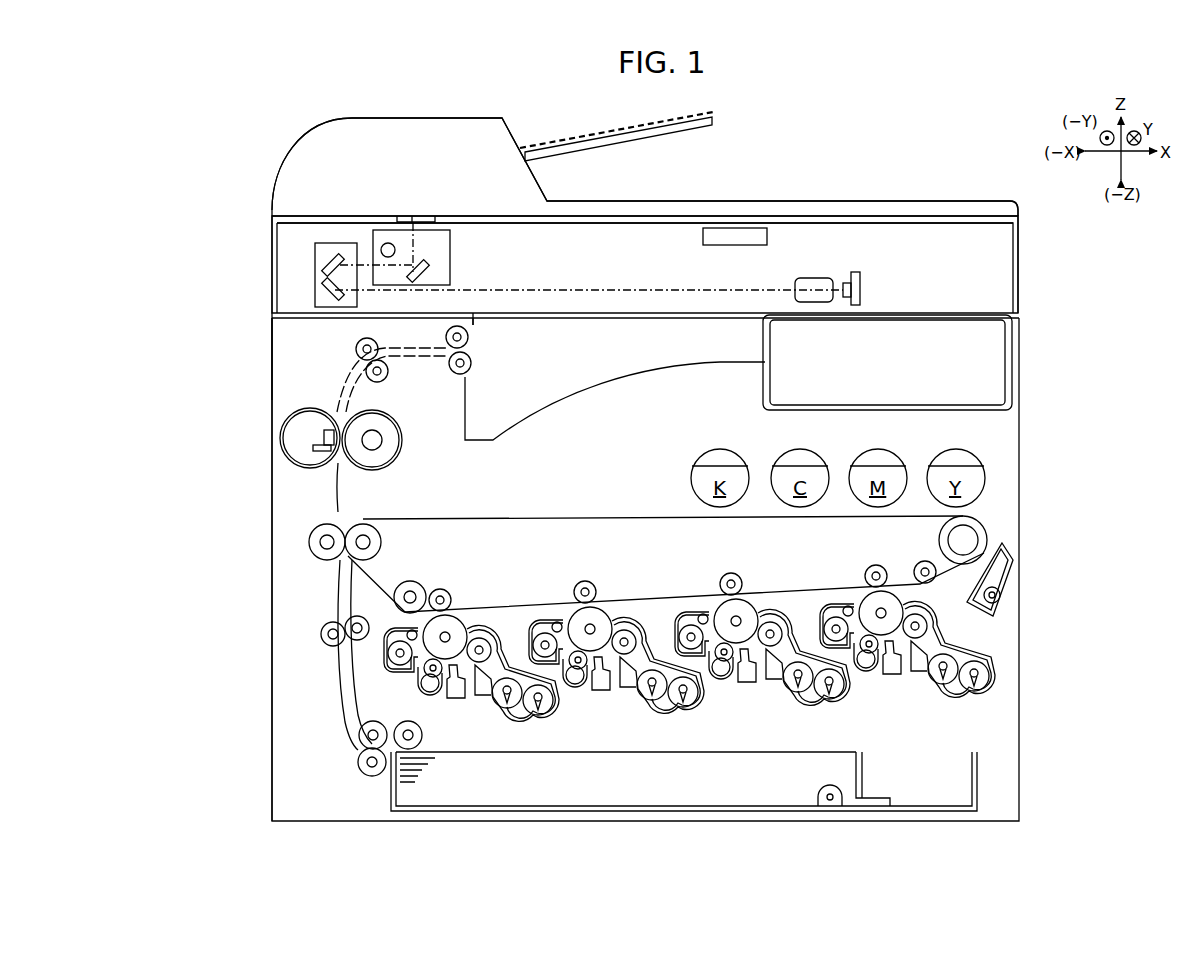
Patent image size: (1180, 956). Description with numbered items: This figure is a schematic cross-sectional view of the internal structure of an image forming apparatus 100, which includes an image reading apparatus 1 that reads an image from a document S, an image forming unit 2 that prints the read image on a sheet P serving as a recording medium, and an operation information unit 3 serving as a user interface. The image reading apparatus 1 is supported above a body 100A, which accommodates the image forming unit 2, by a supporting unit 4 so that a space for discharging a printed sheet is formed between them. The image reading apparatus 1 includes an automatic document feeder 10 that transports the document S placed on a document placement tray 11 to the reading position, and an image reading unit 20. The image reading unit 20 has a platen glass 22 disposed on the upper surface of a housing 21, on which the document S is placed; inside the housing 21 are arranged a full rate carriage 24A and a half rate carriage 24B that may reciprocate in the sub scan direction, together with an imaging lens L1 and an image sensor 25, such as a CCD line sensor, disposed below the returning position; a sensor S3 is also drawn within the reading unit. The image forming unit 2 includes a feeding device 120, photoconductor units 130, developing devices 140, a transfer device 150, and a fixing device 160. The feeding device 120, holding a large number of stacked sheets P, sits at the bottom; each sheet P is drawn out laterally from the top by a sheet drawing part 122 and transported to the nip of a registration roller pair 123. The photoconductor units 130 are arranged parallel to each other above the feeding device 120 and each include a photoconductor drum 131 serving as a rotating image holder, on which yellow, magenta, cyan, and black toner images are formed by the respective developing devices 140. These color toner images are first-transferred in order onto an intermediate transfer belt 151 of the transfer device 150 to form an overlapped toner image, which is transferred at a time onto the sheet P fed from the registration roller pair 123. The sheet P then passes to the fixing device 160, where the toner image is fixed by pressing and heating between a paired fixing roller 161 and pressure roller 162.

The image forming apparatus 100 is at (212, 207).
The body 100A is at (272, 588).
The automatic document feeder 10 is at (278, 182).
The image reading apparatus 1 is at (898, 184).
The image reading unit 20 is at (1004, 279).
The platen glass 22 is at (906, 219).
The housing 21 is at (279, 288).
The half rate carriage 24B is at (318, 296).
The full rate carriage 24A is at (451, 279).
The sensor S3 is at (728, 249).
The imaging lens L1 is at (818, 278).
The image sensor 25 is at (861, 283).
The document placement tray 11 is at (676, 134).
The document S is at (716, 115).
The supporting unit 4 is at (272, 369).
The operation information unit 3 is at (986, 352).
The image forming unit 2 is at (1005, 449).
The fixing device 160 is at (373, 450).
The fixing roller 161 is at (410, 447).
The pressure roller 162 is at (322, 466).
The transfer device 150 is at (590, 513).
The intermediate transfer belt 151 is at (526, 605).
The photoconductor units 130 is at (815, 611).
The photoconductor drums 131 is at (887, 607).
The developing devices 140 is at (969, 698).
The registration roller pair 123 is at (330, 643).
The sheet drawing part 122 is at (378, 780).
The feeding device 120 is at (870, 790).
The sheet P is at (580, 752).